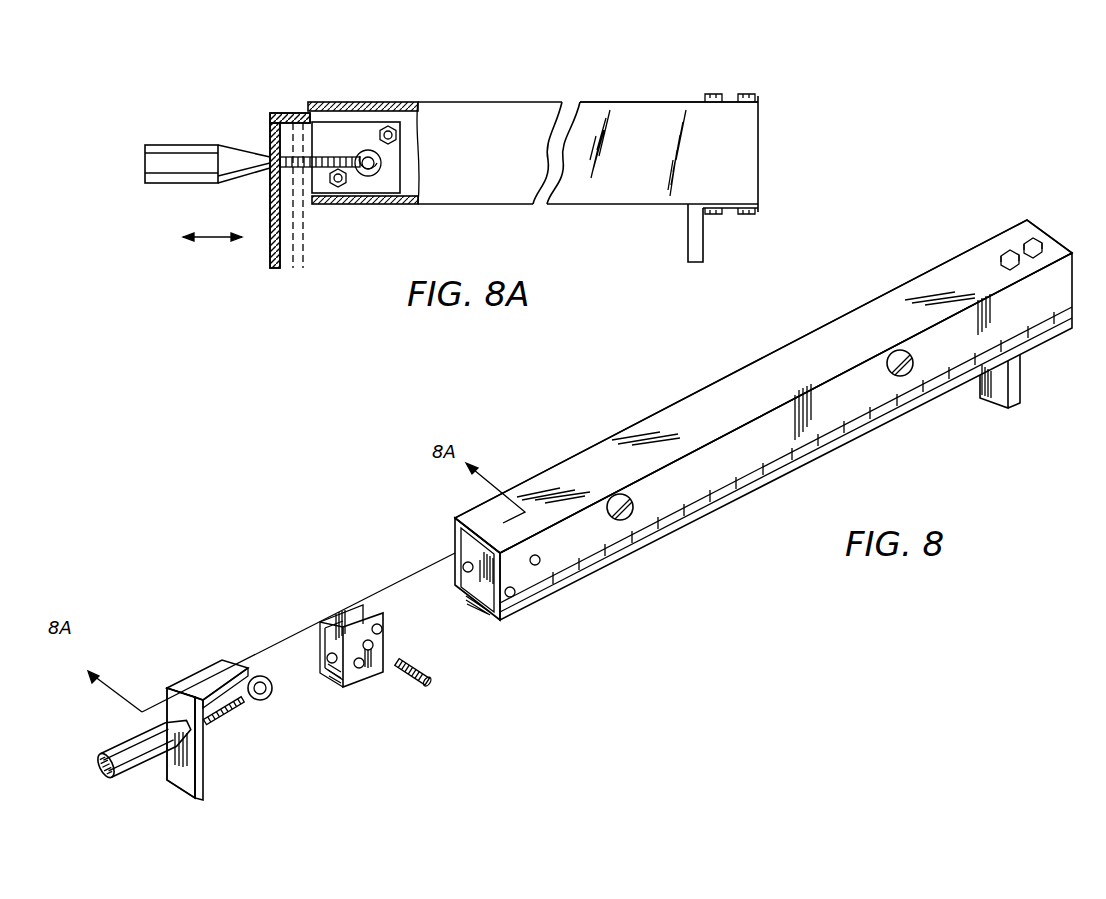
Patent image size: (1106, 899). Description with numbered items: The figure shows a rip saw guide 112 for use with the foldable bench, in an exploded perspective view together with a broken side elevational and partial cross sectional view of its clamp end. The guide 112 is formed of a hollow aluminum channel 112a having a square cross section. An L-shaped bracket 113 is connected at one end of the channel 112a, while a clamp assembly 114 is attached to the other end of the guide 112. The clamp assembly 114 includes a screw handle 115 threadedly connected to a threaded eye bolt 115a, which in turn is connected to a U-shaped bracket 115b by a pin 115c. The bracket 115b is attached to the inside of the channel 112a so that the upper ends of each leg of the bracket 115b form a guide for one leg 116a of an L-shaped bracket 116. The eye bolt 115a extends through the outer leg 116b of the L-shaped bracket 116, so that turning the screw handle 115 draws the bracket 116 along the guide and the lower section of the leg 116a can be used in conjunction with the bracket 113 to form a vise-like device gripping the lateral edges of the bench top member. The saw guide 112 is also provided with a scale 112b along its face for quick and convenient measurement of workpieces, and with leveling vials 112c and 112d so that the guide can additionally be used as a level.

In FIG. 8A, the rip saw guide 112 is at (511, 88).
In FIG. 8, the rip saw guide 112 is at (655, 394).
In FIG. 8A, the hollow aluminum channel 112a is at (638, 106).
In FIG. 8, the hollow aluminum channel 112a is at (935, 282).
In FIG. 8, the scale 112b is at (862, 428).
In FIG. 8, the leveling vial 112c is at (606, 493).
In FIG. 8, the leveling vial 112d is at (890, 351).
In FIG. 8A, the L-shaped bracket 113 is at (694, 240).
In FIG. 8, the L-shaped bracket 113 is at (1020, 404).
In FIG. 8A, the clamp assembly 114 is at (306, 92).
In FIG. 8A, the screw handle 115 is at (145, 140).
In FIG. 8, the screw handle 115 is at (152, 791).
In FIG. 8A, the threaded eye bolt 115a is at (347, 158).
In FIG. 8, the threaded eye bolt 115a is at (265, 699).
In FIG. 8A, the U-shaped bracket 115b is at (322, 206).
In FIG. 8, the U-shaped bracket 115b is at (352, 684).
In FIG. 8A, the pin 115c is at (381, 163).
In FIG. 8, the pin 115c is at (432, 680).
In FIG. 8A, the L-shaped bracket 116 is at (266, 262).
In FIG. 8, the L-shaped bracket 116 is at (206, 812).
In FIG. 8A, the leg of L-shaped bracket 116a is at (272, 221).
In FIG. 8, the leg of L-shaped bracket 116a is at (205, 742).
In FIG. 8A, the outer leg of L-shaped bracket 116b is at (284, 110).